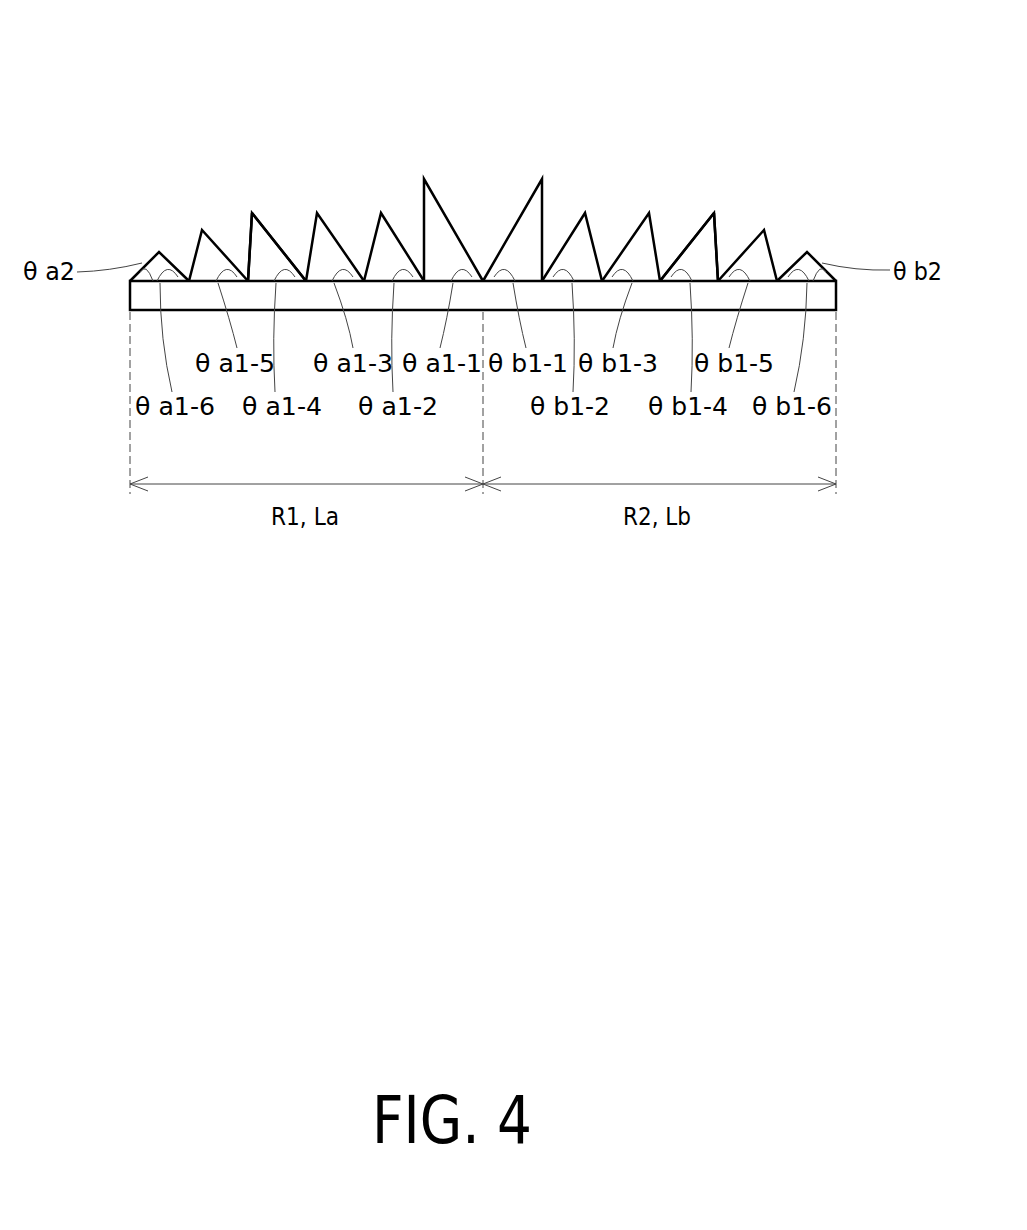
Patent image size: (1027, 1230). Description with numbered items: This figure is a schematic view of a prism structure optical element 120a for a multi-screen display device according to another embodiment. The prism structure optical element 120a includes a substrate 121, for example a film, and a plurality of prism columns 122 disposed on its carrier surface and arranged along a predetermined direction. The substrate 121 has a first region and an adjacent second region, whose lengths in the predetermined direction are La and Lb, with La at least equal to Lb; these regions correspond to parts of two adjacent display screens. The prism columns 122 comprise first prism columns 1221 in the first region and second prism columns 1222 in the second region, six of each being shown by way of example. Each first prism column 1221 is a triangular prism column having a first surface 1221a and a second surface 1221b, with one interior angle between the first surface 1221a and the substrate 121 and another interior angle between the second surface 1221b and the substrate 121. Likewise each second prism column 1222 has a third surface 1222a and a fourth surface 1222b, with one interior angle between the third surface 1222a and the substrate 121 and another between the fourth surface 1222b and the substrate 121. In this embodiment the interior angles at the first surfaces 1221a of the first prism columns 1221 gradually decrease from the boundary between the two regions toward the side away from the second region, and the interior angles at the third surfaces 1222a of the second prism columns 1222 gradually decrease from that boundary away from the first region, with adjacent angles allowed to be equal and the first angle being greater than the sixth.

The prism structure optical element 120a is at (156, 35).
The substrate 121 is at (823, 298).
The prism columns 122 is at (482, 200).
The first prism columns 1221 is at (275, 201).
The first surface 1221a is at (273, 233).
The second surface 1221b is at (248, 230).
The second prism columns 1222 is at (661, 200).
The third surface 1222a is at (693, 233).
The fourth surface 1222b is at (718, 230).